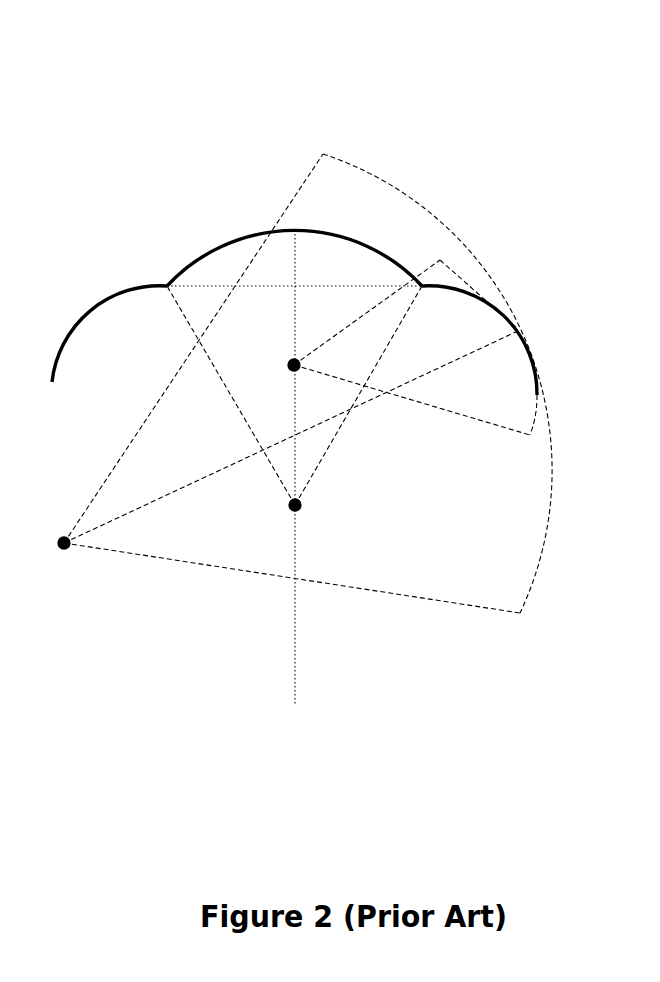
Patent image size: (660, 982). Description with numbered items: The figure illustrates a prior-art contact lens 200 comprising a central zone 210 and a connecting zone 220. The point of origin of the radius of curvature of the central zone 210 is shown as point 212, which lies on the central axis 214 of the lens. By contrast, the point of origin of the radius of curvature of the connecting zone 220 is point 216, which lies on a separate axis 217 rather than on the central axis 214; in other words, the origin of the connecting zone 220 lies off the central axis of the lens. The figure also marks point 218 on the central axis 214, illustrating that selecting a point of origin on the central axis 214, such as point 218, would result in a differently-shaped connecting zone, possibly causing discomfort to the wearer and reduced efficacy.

The contact lens 200 is at (580, 90).
The central zone 210 is at (294, 288).
The point 212 is at (299, 508).
The central axis 214 is at (295, 672).
The point 216 is at (65, 553).
The axis 217 is at (195, 483).
The point 218 is at (291, 361).
The connecting zone 220 is at (477, 288).